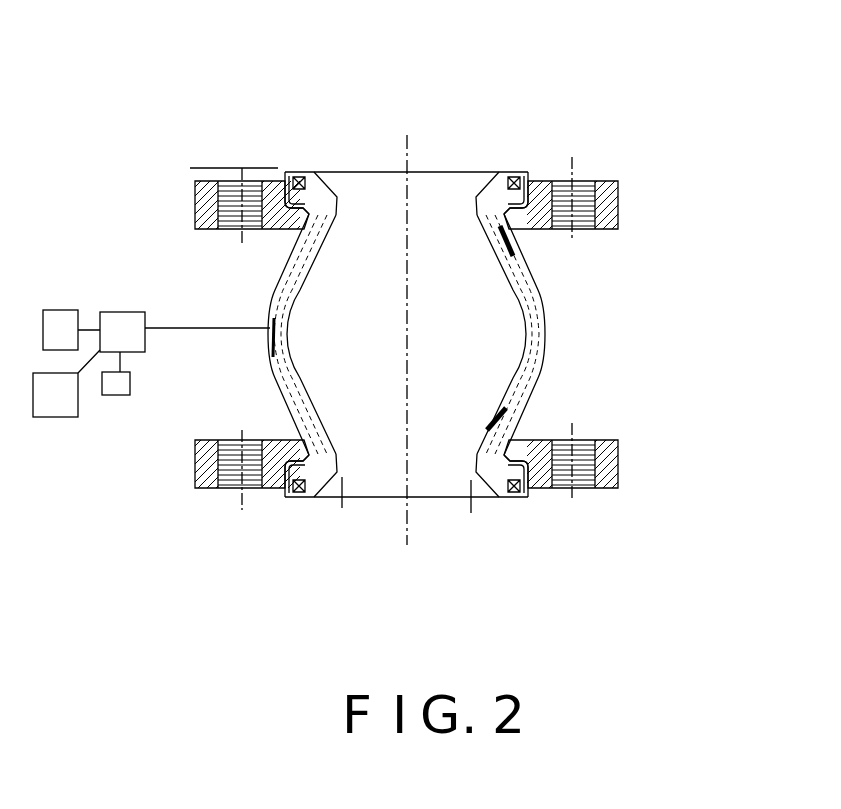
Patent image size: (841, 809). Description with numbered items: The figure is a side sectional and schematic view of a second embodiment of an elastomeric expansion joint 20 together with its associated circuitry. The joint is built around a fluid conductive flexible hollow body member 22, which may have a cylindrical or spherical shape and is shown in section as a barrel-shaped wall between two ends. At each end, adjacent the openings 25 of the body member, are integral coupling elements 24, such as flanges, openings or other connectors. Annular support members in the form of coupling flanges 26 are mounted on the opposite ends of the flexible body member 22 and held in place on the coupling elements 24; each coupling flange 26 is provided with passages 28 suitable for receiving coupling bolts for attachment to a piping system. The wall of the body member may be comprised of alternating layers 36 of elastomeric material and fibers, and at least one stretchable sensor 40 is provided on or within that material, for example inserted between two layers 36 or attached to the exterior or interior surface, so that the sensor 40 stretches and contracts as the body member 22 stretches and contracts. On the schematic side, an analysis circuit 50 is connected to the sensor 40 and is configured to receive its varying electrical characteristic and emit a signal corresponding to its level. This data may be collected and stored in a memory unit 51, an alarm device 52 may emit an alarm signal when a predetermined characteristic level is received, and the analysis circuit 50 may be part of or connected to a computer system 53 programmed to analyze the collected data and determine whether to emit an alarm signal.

The elastomeric expansion joint 20 is at (539, 149).
The flexible hollow body member 22 is at (548, 345).
The integral coupling element 24 is at (295, 175).
The opening 25 is at (337, 172).
The coupling flange 26 is at (195, 203).
The passage 28 is at (228, 182).
The layer 36 is at (267, 367).
The stretchable sensor 40 is at (263, 318).
The analysis circuit 50 is at (118, 312).
The memory unit 51 is at (60, 310).
The alarm device 52 is at (112, 395).
The computer system 53 is at (53, 417).